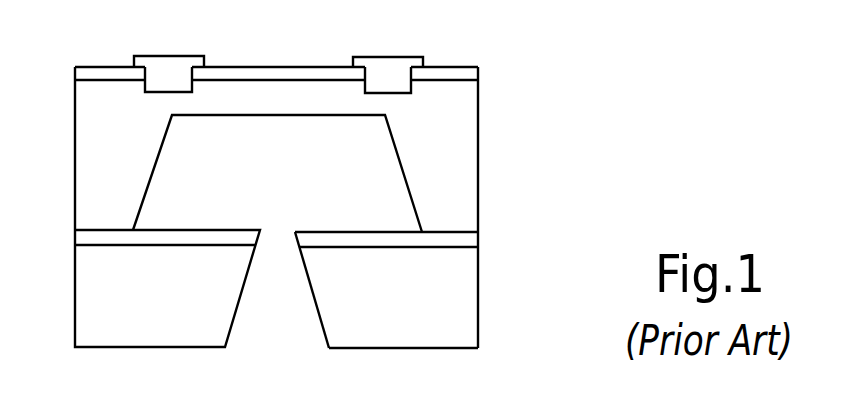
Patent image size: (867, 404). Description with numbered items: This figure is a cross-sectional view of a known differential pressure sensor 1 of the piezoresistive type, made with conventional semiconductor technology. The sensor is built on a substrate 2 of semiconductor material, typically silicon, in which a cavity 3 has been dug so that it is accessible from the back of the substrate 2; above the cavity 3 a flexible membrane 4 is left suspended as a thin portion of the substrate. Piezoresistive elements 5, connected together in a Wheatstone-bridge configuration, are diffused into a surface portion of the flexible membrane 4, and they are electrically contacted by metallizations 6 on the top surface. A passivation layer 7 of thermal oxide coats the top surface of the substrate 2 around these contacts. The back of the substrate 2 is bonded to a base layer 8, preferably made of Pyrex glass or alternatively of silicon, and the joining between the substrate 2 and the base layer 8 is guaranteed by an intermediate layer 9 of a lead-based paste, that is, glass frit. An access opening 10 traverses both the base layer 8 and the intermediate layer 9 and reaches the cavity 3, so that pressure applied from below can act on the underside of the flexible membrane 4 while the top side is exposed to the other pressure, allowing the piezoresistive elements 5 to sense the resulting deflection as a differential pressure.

The differential pressure sensor 1 is at (568, 110).
The substrate 2 is at (105, 141).
The cavity 3 is at (398, 197).
The flexible membrane 4 is at (260, 107).
The piezoresistive elements 5 is at (393, 88).
The metallizations 6 is at (377, 72).
The passivation layer 7 is at (89, 72).
The base layer 8 is at (472, 313).
The intermediate layer 9 is at (467, 238).
The access opening 10 is at (305, 317).